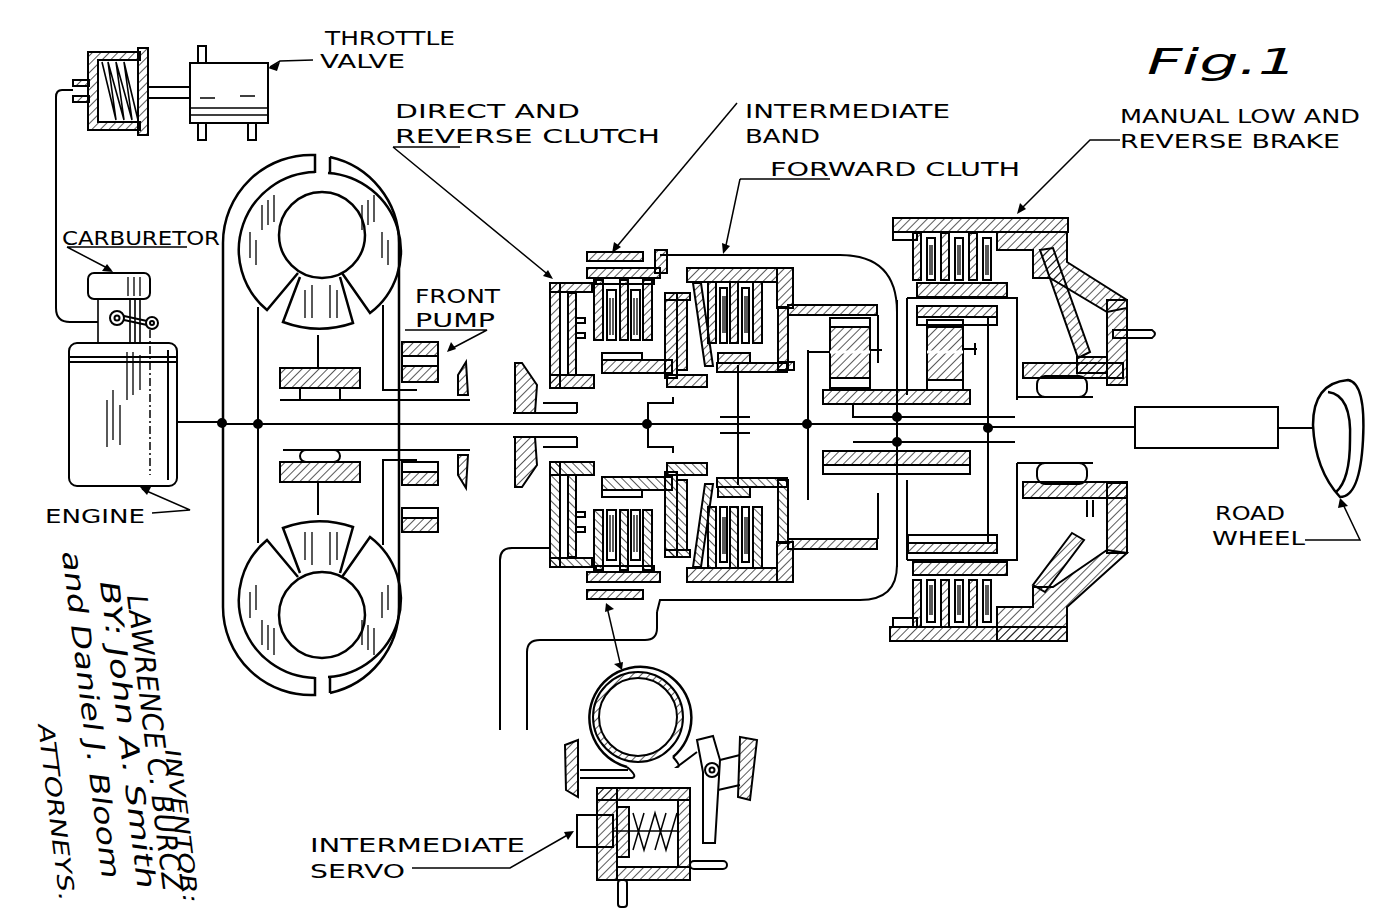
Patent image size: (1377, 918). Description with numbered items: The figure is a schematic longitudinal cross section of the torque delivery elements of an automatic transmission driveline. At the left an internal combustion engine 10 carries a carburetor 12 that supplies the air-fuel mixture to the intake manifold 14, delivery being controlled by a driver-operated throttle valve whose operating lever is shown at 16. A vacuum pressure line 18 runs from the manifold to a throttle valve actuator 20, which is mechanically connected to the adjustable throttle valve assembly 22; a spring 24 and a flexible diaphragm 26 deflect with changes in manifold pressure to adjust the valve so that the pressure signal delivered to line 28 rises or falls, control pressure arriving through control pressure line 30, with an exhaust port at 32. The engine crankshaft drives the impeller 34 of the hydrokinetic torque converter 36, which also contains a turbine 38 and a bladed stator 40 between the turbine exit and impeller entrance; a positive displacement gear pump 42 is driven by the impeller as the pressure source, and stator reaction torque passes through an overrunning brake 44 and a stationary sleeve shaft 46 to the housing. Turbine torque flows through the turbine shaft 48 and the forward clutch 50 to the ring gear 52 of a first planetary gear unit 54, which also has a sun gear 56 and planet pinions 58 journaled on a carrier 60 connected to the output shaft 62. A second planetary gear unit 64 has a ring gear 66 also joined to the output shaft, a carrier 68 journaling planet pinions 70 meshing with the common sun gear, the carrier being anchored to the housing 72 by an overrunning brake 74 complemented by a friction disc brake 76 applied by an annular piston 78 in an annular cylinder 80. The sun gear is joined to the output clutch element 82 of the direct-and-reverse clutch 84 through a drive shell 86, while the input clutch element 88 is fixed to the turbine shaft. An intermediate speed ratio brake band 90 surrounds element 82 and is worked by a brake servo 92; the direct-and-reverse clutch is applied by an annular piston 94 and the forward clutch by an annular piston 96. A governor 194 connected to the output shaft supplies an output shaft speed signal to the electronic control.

The internal combustion engine 10 is at (170, 457).
The carburetor 12 is at (148, 283).
The intake manifold 14 is at (148, 292).
The throttle valve operating lever 16 is at (157, 325).
The vacuum pressure line 18 is at (57, 183).
The throttle valve actuator 20 is at (92, 58).
The throttle valve assembly 22 is at (243, 62).
The spring 24 is at (128, 56).
The flexible diaphragm 26 is at (144, 58).
The throttle pressure signal line 28 is at (203, 55).
The control pressure line 30 is at (200, 132).
The exhaust port 32 is at (248, 133).
The impeller 34 is at (380, 225).
The hydrokinetic torque converter 36 is at (307, 158).
The turbine 38 is at (260, 203).
The bladed stator 40 is at (313, 278).
The positive displacement gear pump 42 is at (400, 350).
The overrunning brake 44 is at (316, 368).
The stationary sleeve shaft 46 is at (462, 412).
The turbine shaft 48 is at (587, 424).
The forward clutch 50 is at (713, 257).
The ring gear 52 is at (872, 300).
The first planetary gear unit 54 is at (828, 367).
The sun gear 56 is at (822, 455).
The planet pinions 58 is at (823, 405).
The carrier 60 is at (805, 350).
The output shaft 62 is at (1122, 430).
The second planetary gear unit 64 is at (966, 340).
The ring gear 66 is at (966, 537).
The carrier 68 is at (897, 302).
The planet pinions 70 is at (950, 392).
The housing 72 is at (1113, 296).
The overrunning brake 74 is at (1040, 398).
The friction disc brake 76 is at (942, 238).
The annular piston 78 is at (1082, 295).
The annular cylinder 80 is at (1084, 293).
The output clutch element 82 is at (640, 250).
The direct-and-reverse clutch 84 is at (554, 282).
The drive shell 86 is at (780, 260).
The input clutch element 88 is at (603, 376).
The intermediate speed ratio brake band 90 is at (587, 273).
The brake servo 92 is at (692, 860).
The annular piston 94 is at (560, 322).
The annular piston 96 is at (680, 378).
The governor 194 is at (1250, 406).